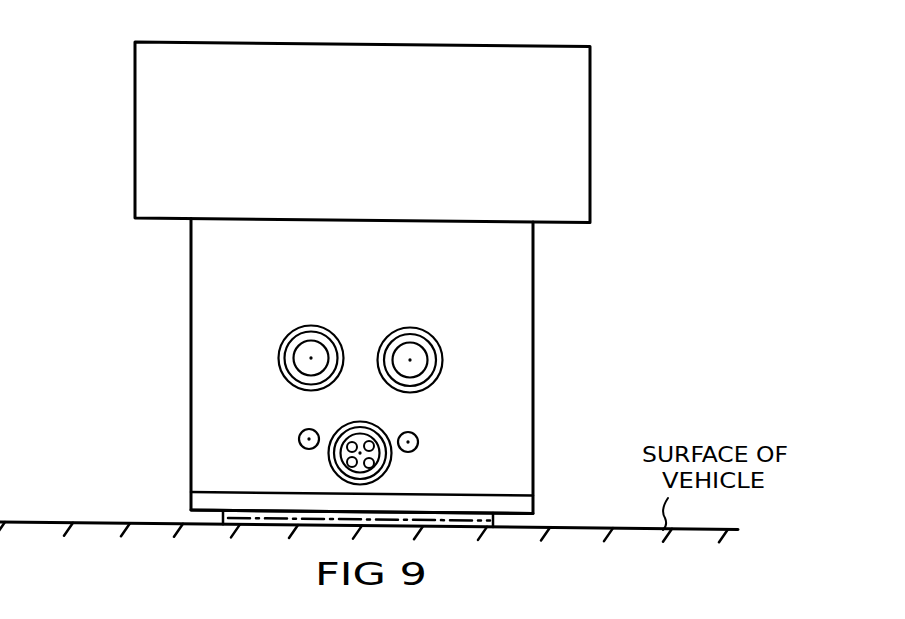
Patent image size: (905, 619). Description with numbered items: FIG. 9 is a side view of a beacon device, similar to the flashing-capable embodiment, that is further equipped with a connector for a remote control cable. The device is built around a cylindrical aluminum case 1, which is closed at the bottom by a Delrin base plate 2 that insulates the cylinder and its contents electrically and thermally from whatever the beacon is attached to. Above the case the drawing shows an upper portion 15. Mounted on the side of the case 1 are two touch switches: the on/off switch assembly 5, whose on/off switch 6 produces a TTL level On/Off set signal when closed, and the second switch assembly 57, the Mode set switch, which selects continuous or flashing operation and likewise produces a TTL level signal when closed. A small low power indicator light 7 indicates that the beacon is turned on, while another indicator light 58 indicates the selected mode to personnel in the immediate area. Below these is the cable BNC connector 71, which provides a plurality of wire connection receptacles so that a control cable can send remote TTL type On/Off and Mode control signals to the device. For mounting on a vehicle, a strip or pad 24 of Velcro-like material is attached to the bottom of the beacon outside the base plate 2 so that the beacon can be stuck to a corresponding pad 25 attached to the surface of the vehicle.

The upper housing / display section 15 is at (135, 148).
The cylindrical aluminum case 1 is at (191, 368).
The Delrin base plate 2 is at (533, 509).
The strip or pad of Velcro-like material 24 is at (271, 492).
The corresponding pad 25 is at (223, 518).
The second switch assembly 57 is at (313, 315).
The on/off switch assembly 5 is at (442, 337).
The on/off switch 6 is at (418, 357).
The indicator light 58 is at (298, 440).
The indicator light 7 is at (418, 442).
The cable BNC connector 71 is at (377, 458).